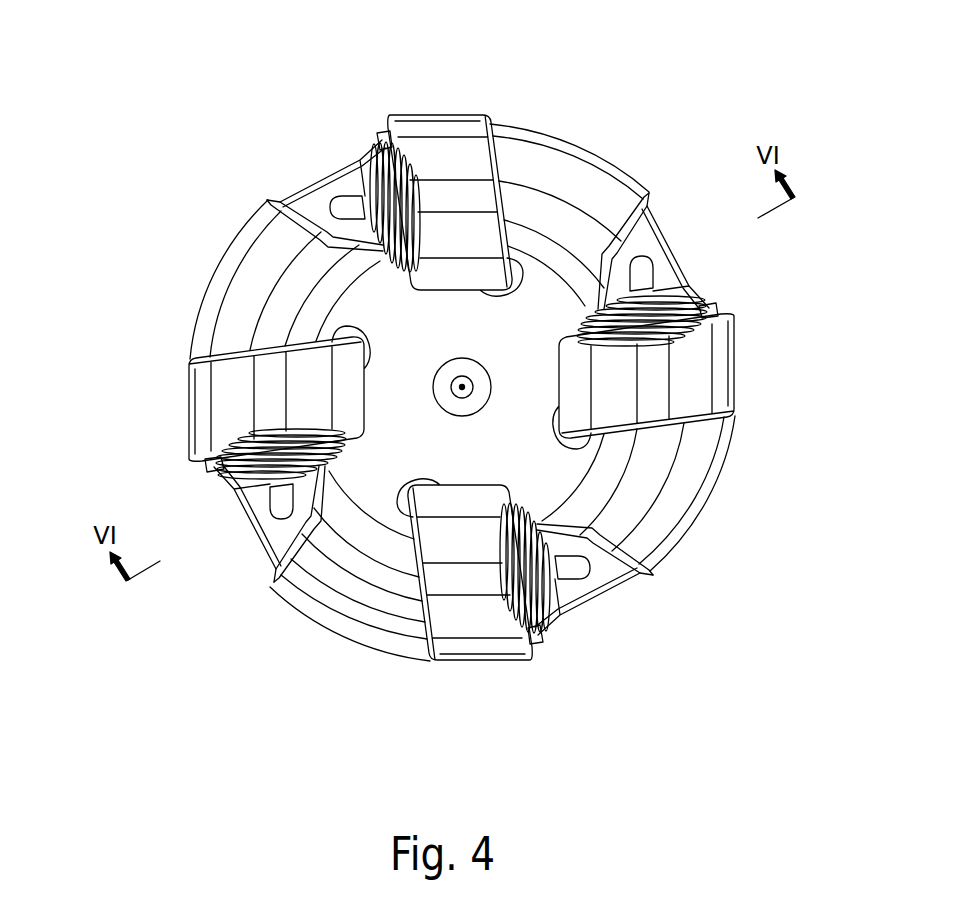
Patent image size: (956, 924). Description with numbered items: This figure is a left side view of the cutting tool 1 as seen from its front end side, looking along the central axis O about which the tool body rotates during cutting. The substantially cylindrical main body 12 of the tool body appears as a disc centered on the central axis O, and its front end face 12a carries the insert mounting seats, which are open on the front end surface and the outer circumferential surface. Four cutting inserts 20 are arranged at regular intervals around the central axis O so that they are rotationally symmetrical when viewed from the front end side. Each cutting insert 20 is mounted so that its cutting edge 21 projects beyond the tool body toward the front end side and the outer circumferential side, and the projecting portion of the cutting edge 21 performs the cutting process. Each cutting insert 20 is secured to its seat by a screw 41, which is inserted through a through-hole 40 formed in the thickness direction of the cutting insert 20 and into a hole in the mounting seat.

The cutting tool 1 is at (70, 21).
The main body 12 is at (197, 305).
The end face of tool body 12a is at (380, 308).
The cutting insert 20 is at (448, 150).
The cutting edge 21 is at (384, 150).
The through-hole 40 is at (362, 198).
The screw 41 is at (330, 207).
The central axis O is at (472, 378).